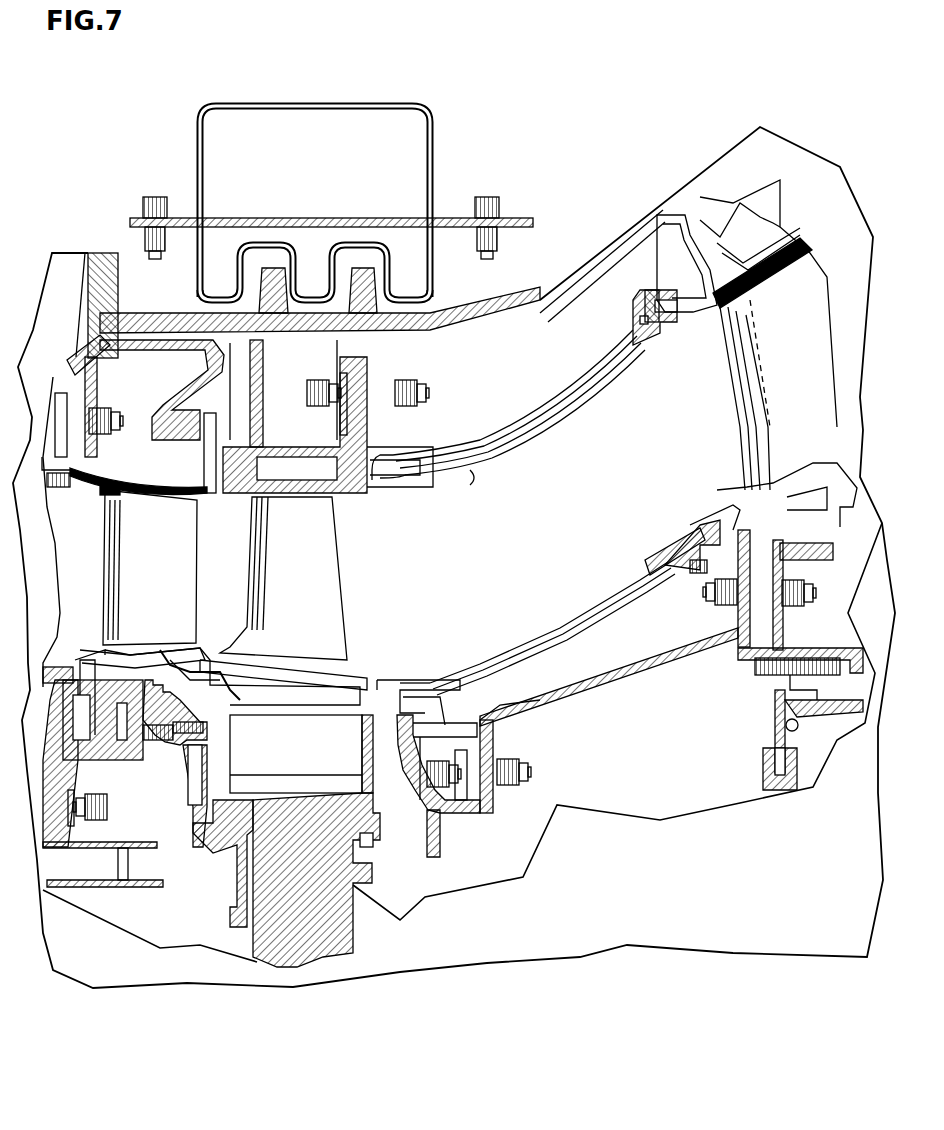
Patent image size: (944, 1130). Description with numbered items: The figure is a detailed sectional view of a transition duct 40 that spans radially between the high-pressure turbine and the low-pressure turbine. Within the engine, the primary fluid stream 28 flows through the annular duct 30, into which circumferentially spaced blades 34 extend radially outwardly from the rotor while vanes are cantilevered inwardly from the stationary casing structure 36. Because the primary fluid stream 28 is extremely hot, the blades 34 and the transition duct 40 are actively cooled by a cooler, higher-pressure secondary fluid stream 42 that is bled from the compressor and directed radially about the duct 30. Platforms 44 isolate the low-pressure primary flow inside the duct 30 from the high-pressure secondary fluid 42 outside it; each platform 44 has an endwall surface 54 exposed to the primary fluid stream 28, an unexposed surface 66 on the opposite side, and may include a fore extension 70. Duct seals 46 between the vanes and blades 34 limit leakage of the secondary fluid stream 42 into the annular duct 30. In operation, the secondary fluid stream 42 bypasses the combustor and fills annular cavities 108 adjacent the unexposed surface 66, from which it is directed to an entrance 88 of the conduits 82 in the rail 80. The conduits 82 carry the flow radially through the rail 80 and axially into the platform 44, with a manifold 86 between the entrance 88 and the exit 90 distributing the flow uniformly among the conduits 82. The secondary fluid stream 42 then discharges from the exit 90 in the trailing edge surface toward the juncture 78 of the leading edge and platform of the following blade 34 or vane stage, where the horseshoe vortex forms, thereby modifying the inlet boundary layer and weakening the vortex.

The primary fluid stream 28 is at (100, 574).
The annular duct 30 is at (231, 565).
The blades 34 is at (350, 566).
The casing structure 36 is at (313, 895).
The transition duct 40 is at (456, 583).
The secondary fluid stream 42 is at (500, 372).
The platforms 44 is at (484, 438).
The duct seals 46 is at (150, 758).
The endwall surface 54 is at (480, 472).
The unexposed surface 66 is at (540, 398).
The fore extension 70 is at (393, 668).
The juncture 78 is at (737, 485).
The rail 80 is at (705, 568).
The conduits 82 is at (640, 305).
The manifold 86 is at (640, 319).
The entrance 88 is at (650, 290).
The exit 90 is at (680, 318).
The annular cavities 108 is at (549, 349).